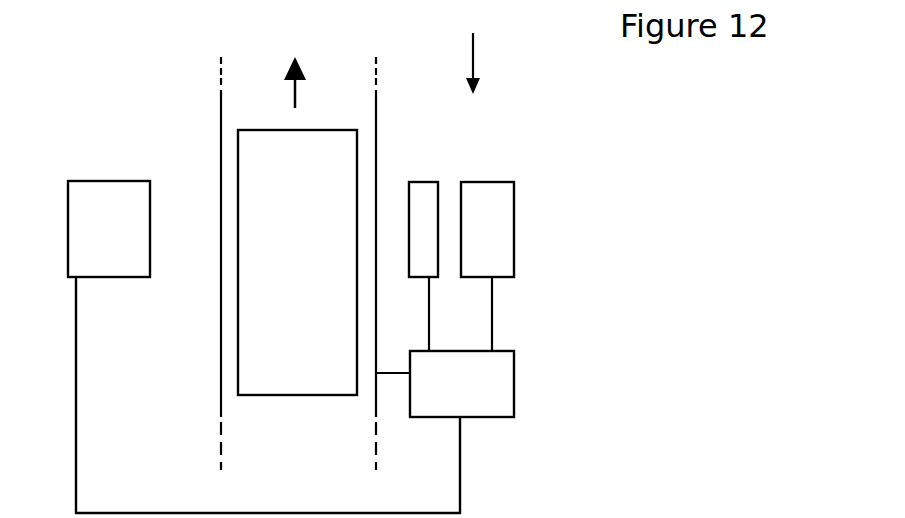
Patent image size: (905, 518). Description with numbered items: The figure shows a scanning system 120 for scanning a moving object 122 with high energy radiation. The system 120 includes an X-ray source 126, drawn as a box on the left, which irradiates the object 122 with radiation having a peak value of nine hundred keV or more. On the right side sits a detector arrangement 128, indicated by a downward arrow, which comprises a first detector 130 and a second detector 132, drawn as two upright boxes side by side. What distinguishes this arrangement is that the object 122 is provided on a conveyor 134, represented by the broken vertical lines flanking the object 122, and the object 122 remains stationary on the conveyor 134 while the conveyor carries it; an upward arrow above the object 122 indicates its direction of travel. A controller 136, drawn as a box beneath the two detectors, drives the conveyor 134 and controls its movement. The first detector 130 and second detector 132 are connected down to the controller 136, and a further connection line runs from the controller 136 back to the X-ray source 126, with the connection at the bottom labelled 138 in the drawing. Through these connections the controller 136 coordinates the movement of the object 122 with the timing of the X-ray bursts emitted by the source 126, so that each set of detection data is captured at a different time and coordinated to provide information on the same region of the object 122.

The system 120 is at (616, 168).
The moving object 122 is at (319, 275).
The X-ray source 126 is at (129, 254).
The detector arrangement 128 is at (470, 48).
The first detector 130 is at (429, 182).
The second detector 132 is at (498, 182).
The conveyor 134 is at (221, 417).
The controller 136 is at (482, 388).
The connection line 138 is at (596, 517).